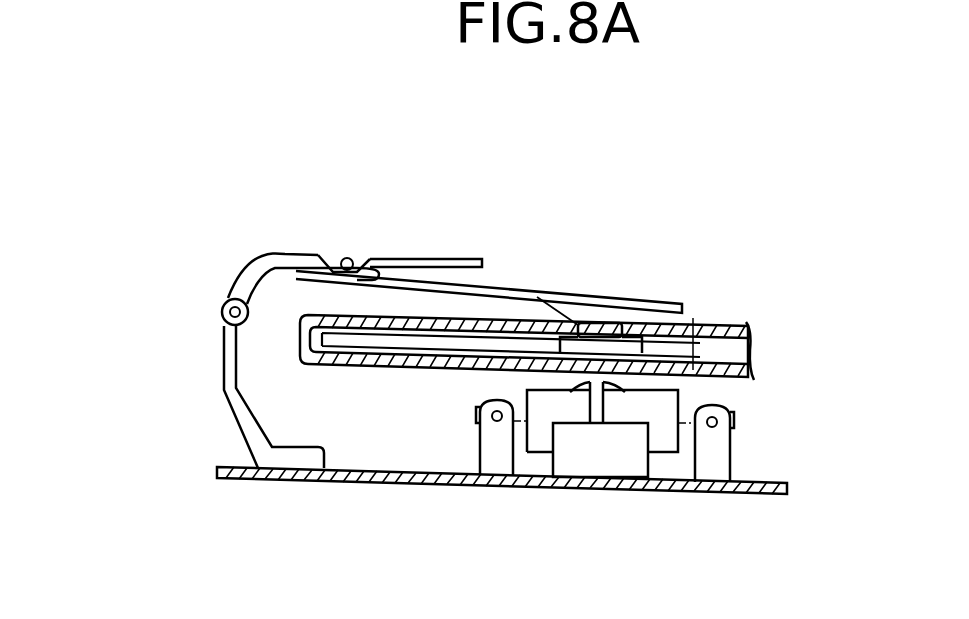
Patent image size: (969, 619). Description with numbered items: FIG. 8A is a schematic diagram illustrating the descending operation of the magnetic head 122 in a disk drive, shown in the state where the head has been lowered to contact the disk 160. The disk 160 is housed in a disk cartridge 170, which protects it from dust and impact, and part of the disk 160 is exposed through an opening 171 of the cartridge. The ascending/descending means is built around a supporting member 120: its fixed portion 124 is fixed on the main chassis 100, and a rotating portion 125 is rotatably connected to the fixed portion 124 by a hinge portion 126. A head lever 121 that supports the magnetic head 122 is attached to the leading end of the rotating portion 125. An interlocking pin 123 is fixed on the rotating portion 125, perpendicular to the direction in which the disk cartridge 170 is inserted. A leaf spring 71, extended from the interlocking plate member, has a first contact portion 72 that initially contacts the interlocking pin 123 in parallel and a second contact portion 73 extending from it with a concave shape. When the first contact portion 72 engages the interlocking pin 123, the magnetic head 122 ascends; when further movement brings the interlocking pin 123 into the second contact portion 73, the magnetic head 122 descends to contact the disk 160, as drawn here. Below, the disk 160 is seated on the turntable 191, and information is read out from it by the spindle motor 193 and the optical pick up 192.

The main chassis 100 is at (262, 480).
The supporting member 120 is at (252, 320).
The head lever 121 is at (502, 285).
The magnetic head 122 is at (614, 322).
The interlocking pin 123 is at (349, 258).
The fixed portion 124 is at (240, 432).
The rotating portion 125 is at (280, 253).
The hinge portion 126 is at (224, 291).
The disk 160 is at (732, 352).
The disk cartridge 170 is at (702, 310).
The opening 171 is at (533, 323).
The turntable 191 is at (478, 403).
The optical pick up 192 is at (723, 409).
The spindle motor 193 is at (555, 452).
The leaf spring 71 is at (385, 258).
The first contact portion 72 is at (310, 257).
The second contact portion 73 is at (340, 262).